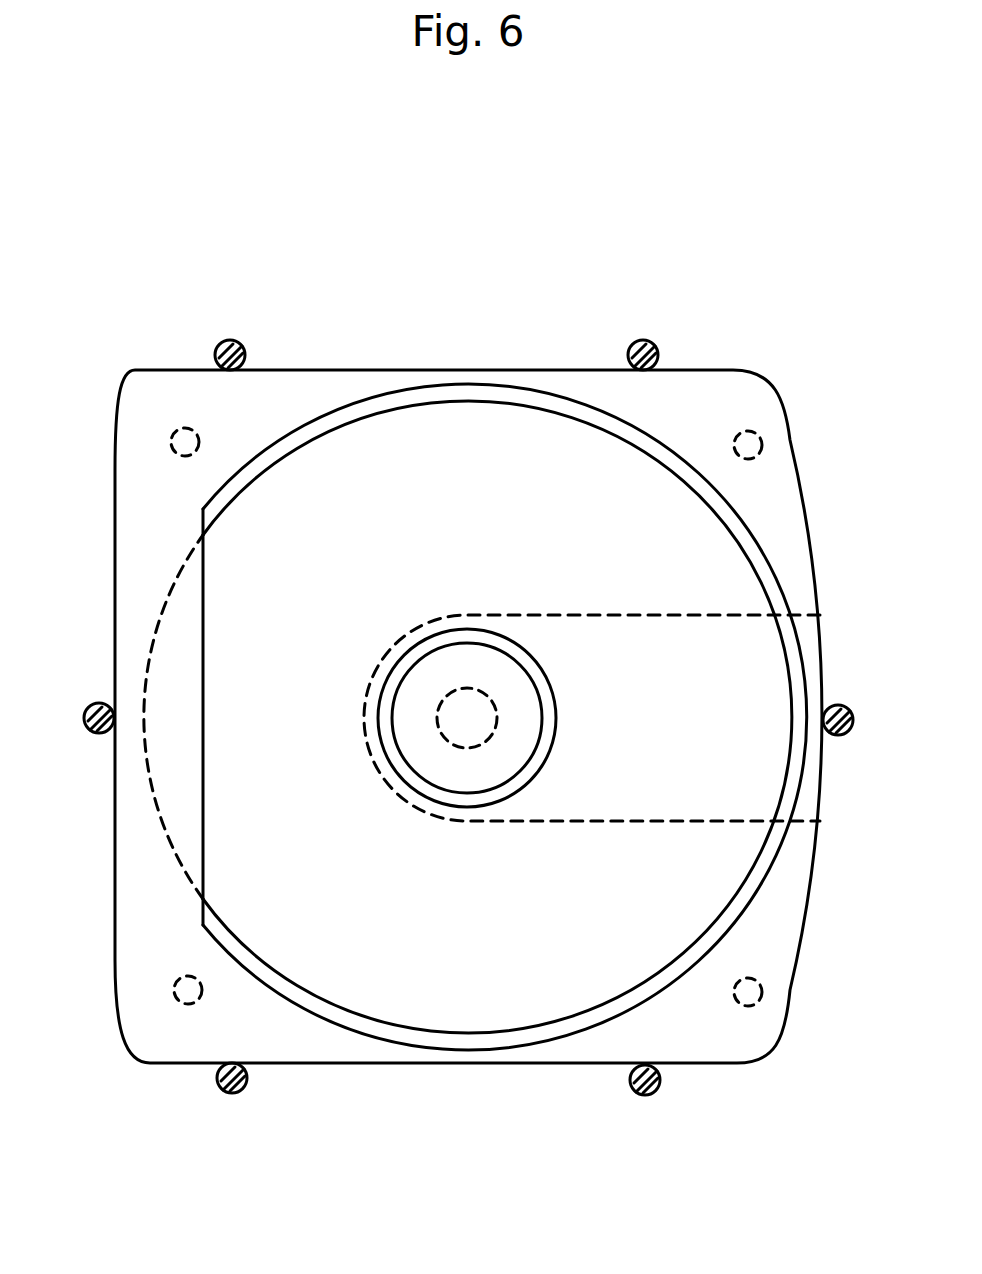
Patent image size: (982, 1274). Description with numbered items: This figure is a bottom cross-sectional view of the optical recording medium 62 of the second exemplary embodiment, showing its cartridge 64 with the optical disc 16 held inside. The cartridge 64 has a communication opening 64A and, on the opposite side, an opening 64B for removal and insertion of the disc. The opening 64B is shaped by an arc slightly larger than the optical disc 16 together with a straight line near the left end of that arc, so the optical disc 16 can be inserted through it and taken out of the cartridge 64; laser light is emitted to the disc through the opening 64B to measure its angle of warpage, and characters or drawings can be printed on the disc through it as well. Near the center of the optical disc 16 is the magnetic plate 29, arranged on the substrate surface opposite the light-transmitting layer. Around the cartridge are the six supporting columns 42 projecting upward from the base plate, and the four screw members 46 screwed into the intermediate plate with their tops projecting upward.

The optical recording medium 62 is at (493, 232).
The cartridge 64 is at (385, 370).
The communication opening 64A is at (368, 404).
The opening for removal and insertion 64B is at (590, 618).
The magnetic plate 29 is at (430, 650).
The optical disc 16 is at (756, 572).
The supporting column 42 is at (238, 342).
The screw member 46 is at (171, 440).